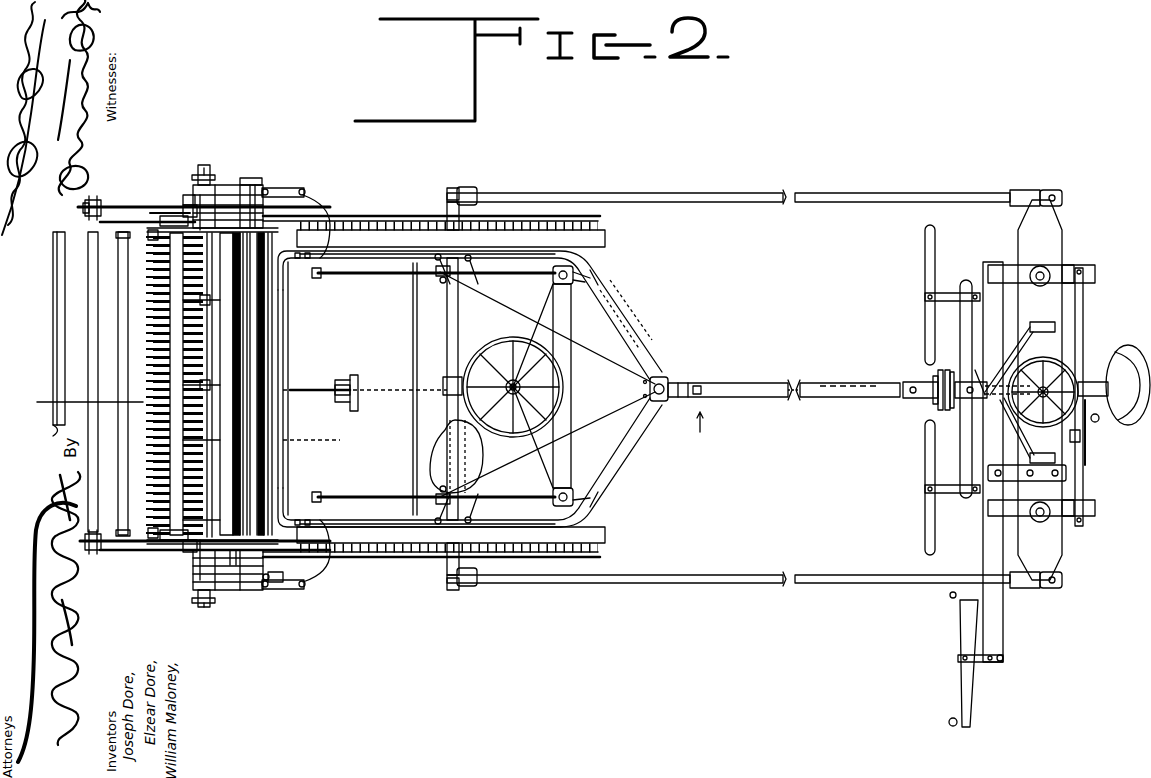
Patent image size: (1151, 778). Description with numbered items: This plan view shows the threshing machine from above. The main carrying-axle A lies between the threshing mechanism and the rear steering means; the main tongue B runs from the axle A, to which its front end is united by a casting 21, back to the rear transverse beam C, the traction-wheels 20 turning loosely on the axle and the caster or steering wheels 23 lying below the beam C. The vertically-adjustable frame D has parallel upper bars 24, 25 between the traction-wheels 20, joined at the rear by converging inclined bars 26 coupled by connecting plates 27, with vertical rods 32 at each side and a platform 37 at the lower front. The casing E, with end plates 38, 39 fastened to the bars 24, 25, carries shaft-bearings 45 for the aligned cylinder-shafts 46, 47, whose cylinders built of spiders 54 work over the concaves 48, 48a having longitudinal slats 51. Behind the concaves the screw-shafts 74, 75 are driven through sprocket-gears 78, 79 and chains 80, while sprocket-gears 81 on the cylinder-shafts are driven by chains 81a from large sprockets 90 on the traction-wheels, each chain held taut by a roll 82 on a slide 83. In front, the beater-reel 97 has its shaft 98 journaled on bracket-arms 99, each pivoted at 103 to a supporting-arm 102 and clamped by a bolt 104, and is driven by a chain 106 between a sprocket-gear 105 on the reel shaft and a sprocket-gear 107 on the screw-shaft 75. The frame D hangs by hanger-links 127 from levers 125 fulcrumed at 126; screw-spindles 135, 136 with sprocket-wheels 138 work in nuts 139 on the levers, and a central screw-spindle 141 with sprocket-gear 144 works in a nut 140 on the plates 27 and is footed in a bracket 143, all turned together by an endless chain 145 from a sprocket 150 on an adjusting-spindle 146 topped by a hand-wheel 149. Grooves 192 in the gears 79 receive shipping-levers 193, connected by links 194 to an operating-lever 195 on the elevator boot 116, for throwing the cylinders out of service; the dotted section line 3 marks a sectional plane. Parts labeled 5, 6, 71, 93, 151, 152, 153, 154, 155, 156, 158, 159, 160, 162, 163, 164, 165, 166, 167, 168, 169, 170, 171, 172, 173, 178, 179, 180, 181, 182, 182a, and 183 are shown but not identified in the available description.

The dotted section line 3 is at (755, 407).
The axle 5 is at (840, 398).
The shaft section 6 is at (810, 398).
The traction-wheels 20 is at (605, 240).
The casting 21 is at (445, 380).
The caster or steering wheels 23 is at (1000, 265).
The upper bar 24 is at (390, 275).
The upper bar 25 is at (365, 520).
The inclined bars 26 is at (610, 327).
The connecting plate 27 is at (665, 375).
The vertical rods 32 is at (460, 270).
The platform 37 is at (401, 389).
The end plate 38 is at (232, 185).
The end plate 39 is at (230, 590).
The shaft-bearings 45 is at (185, 210).
The cylinder-shaft 46 is at (212, 322).
The cylinder-shaft 47 is at (203, 460).
The concave 48 is at (250, 290).
The concave 48a is at (272, 445).
The slats or bars 51 is at (233, 338).
The spiders 54 is at (170, 300).
The frame side 71 is at (289, 287).
The screw-shaft 74 is at (270, 583).
The screw-shaft 75 is at (290, 188).
The sprocket-gears 78 is at (257, 185).
The sprocket-gears 79 is at (203, 166).
The sprocket-chains 80 is at (210, 175).
The sprocket-gears 81 is at (198, 215).
The sprocket-chains 81a is at (340, 222).
The roll 82 is at (300, 215).
The slide 83 is at (312, 220).
The large sprockets 90 is at (450, 205).
The teeth 93 is at (145, 348).
The beater-reel 97 is at (46, 334).
The shaft of beater-reel 98 is at (93, 335).
The bracket-arms 99 is at (118, 208).
The supporting-arms 102 is at (170, 214).
The pivot 103 is at (150, 222).
The bolt 104 is at (165, 217).
The sprocket-gear 105 is at (92, 200).
The chain 106 is at (100, 204).
The sprocket-gear 107 is at (252, 178).
The boot or casing of the elevator 116 is at (354, 375).
The levers 125 is at (375, 276).
The fulcrum 126 is at (440, 282).
The hanger-links 127 is at (320, 279).
The screw-spindle 135 is at (590, 278).
The screw-spindle 136 is at (590, 500).
The sprocket-wheel 138 is at (563, 285).
The female-threaded nut 139 is at (595, 286).
The nut 140 is at (680, 384).
The central screw-spindle 141 is at (698, 386).
The bracket 143 is at (689, 423).
The sprocket-gear 144 is at (680, 398).
The endless chain 145 is at (640, 437).
The adjusting-spindle 146 is at (505, 412).
The hand-wheel 149 is at (508, 340).
The sprocket 150 is at (517, 382).
The wheel 151 is at (1110, 380).
The post 152 is at (572, 367).
The wheel 153 is at (1043, 427).
The bracket 154 is at (1030, 328).
The rod 155 is at (998, 372).
The cam 156 is at (1080, 440).
The rod 158 is at (1086, 465).
The pin 159 is at (1095, 422).
The bar 160 is at (1083, 306).
The block 162 is at (1070, 268).
The pivot 163 is at (1040, 266).
The rod 164 is at (742, 584).
The rod 165 is at (770, 193).
The block 166 is at (477, 192).
The pin 167 is at (453, 188).
The sleeve 168 is at (1020, 190).
The pivot block 169 is at (1052, 190).
The flange 170 is at (938, 380).
The flange 171 is at (947, 370).
The coupling 172 is at (910, 400).
The disc 173 is at (940, 372).
The bar 178 is at (985, 546).
The bar 179 is at (964, 490).
The bar 180 is at (1060, 481).
The lever 181 is at (960, 683).
The cross bar 182 is at (980, 325).
The link 182a is at (989, 377).
The upright 183 is at (925, 268).
The groove 192 is at (205, 165).
The shipping-levers 193 is at (304, 190).
The links or pitmen 194 is at (275, 355).
The operating-lever 195 is at (360, 398).
The main carrying-axle A is at (458, 328).
The main tongue B is at (760, 382).
The rear transverse beam C is at (1060, 243).
The vertically-adjustable frame D is at (360, 260).
The casing E is at (186, 198).